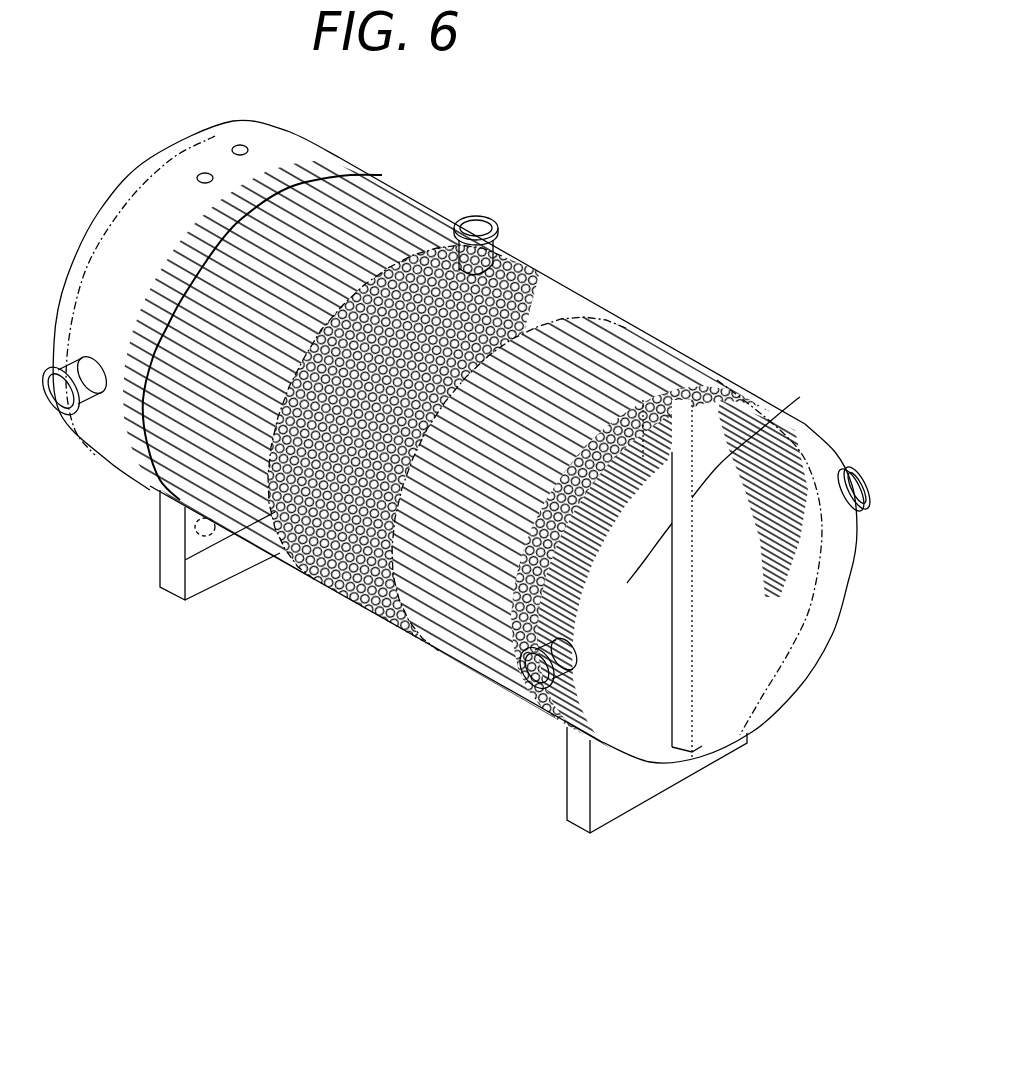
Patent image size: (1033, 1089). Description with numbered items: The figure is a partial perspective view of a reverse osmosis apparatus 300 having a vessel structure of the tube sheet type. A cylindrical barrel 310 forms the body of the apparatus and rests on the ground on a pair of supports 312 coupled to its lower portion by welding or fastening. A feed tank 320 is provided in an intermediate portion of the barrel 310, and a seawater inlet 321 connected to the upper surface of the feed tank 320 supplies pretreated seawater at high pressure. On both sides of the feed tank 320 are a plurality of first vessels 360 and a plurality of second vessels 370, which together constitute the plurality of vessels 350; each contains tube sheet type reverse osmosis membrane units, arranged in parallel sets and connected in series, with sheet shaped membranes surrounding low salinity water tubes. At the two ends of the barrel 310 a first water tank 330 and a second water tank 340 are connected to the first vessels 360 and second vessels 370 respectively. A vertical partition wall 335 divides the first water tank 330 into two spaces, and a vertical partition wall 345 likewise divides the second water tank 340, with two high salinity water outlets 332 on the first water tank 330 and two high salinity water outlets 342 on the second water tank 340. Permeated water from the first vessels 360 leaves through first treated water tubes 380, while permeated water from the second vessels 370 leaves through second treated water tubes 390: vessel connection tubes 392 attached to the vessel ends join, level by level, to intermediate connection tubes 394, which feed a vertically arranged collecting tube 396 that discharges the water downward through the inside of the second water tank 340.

The reverse osmosis apparatus 300 is at (457, 178).
The cylindrical barrel 310 is at (683, 350).
The supports 312 is at (164, 598).
The feed tank 320 is at (537, 290).
The seawater inlet 321 is at (475, 216).
The first water tank 330 is at (138, 252).
The high salinity water outlets 332 is at (80, 372).
The vertical partition wall 335 is at (196, 138).
The second water tank 340 is at (813, 447).
The high salinity water outlets 342 is at (863, 493).
The vertical partition wall 345 is at (743, 673).
The vessels 350 is at (404, 485).
The first vessels 360 is at (377, 183).
The second vessels 370 is at (627, 323).
The first treated water tubes 380 is at (200, 530).
The second treated water tubes 390 is at (623, 784).
The vessel connection tubes 392 is at (627, 713).
The intermediate connection tubes 394 is at (645, 720).
The collecting tube 396 is at (687, 733).